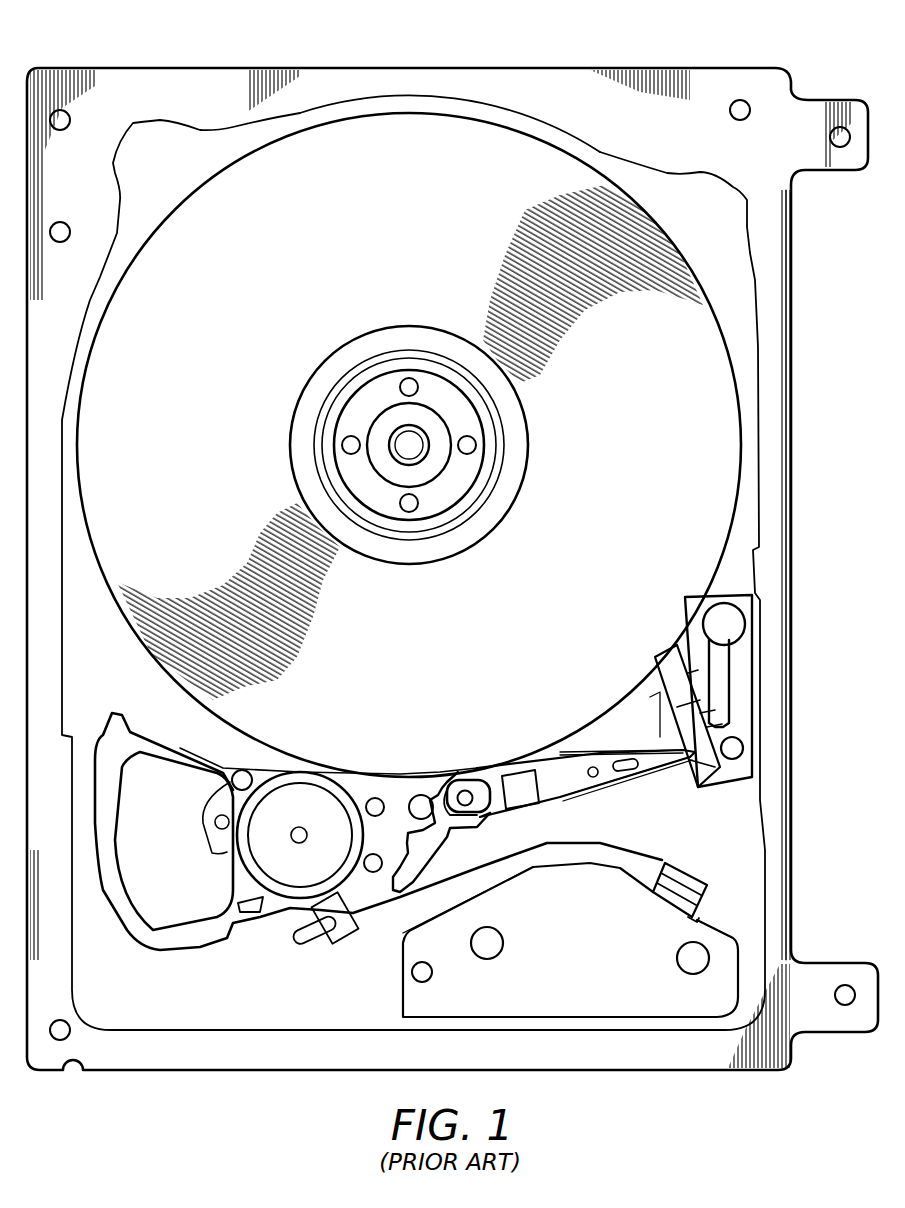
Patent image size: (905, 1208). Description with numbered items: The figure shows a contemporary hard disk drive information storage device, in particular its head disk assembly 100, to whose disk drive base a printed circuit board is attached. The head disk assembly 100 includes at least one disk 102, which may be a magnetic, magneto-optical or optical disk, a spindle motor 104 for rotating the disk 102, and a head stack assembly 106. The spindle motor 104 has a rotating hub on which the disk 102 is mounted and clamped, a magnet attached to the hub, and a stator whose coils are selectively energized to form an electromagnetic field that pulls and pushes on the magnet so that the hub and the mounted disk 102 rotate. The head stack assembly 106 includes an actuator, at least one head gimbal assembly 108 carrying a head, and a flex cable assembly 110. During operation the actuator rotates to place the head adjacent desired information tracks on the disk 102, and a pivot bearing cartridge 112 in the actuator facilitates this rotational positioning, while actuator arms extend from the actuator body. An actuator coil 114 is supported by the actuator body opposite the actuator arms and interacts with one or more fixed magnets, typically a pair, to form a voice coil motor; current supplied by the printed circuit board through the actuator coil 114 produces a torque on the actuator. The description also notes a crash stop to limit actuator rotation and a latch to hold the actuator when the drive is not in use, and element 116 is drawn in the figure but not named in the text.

The head disk assembly 100 is at (563, 62).
The disk 102 is at (386, 236).
The spindle motor 104 is at (377, 400).
The head stack assembly 106 is at (458, 770).
The head gimbal assembly 108 is at (623, 747).
The flex cable assembly 110 is at (653, 843).
The pivot bearing cartridge 112 is at (288, 863).
The actuator coil 114 is at (163, 950).
The load/unload ramp 116 is at (663, 652).